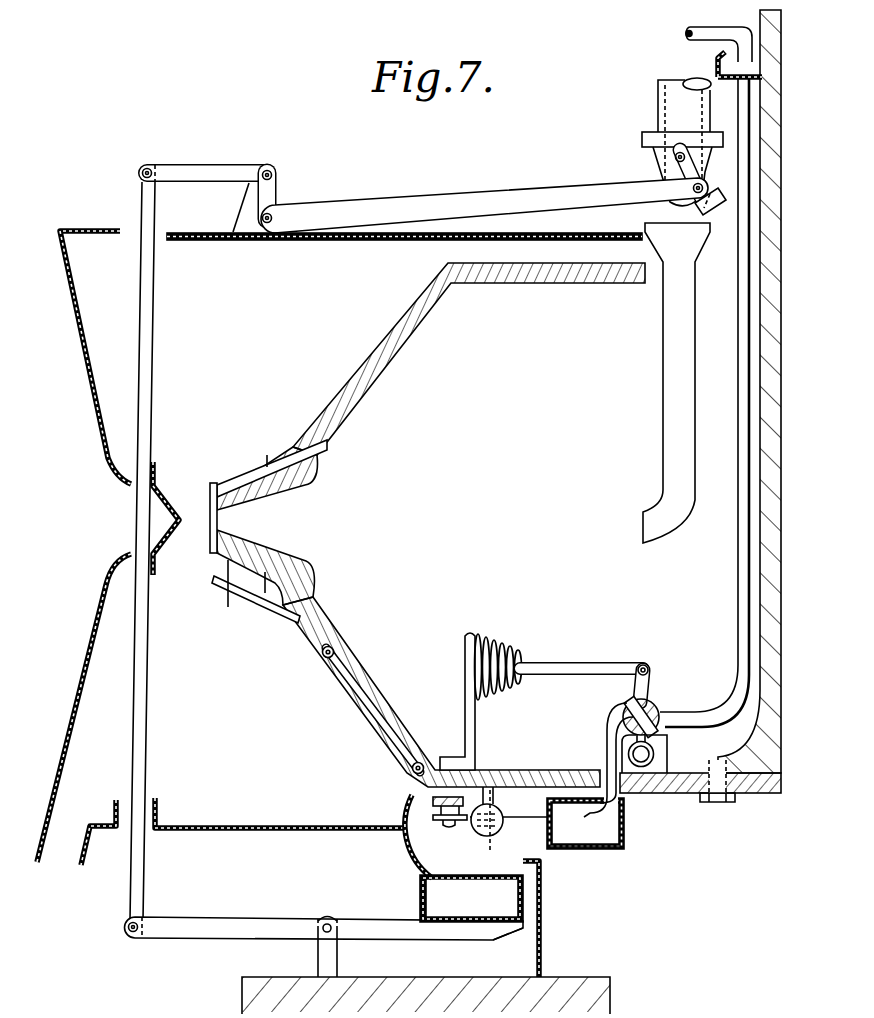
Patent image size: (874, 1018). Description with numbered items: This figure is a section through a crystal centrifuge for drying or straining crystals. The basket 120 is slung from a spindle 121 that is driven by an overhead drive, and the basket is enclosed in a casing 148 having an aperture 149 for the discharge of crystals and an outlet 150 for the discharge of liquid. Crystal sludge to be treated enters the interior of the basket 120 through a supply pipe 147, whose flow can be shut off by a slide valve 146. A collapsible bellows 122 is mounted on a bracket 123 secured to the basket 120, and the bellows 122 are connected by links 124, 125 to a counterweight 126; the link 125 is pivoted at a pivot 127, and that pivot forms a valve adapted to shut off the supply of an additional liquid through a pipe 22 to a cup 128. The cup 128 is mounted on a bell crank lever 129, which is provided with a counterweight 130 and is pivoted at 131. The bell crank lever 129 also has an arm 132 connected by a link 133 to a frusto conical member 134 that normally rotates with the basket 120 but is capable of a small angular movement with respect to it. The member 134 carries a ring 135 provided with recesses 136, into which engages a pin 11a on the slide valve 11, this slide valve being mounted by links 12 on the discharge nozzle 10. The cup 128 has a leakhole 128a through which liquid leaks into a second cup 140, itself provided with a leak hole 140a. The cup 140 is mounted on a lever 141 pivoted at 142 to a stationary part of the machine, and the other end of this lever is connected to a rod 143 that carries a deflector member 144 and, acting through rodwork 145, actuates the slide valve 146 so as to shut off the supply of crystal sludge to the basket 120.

The discharge nozzle 10 is at (291, 480).
The slide valve 11 is at (212, 495).
The pin 11a is at (220, 573).
The links 12 is at (242, 467).
The pipe 22 is at (738, 444).
The basket 120 is at (497, 279).
The spindle 121 is at (765, 560).
The collapsible bellows 122 is at (493, 640).
The bracket 123 is at (463, 658).
The link 124 is at (603, 662).
The link 125 is at (652, 688).
The counterweight 126 is at (628, 754).
The pivot 127 is at (659, 702).
The cup 128 is at (611, 843).
The leakhole 128a is at (545, 850).
The bell crank lever 129 is at (533, 818).
The counterweight 130 is at (476, 828).
The pivot 131 is at (493, 833).
The arm 132 is at (458, 822).
The link 133 is at (437, 810).
The frusto conical member 134 is at (362, 717).
The ring 135 is at (251, 603).
The recesses 136 is at (218, 594).
The cup 140 is at (471, 898).
The leak hole 140a is at (510, 928).
The lever 141 is at (385, 920).
The pivot 142 is at (328, 924).
The rod 143 is at (146, 690).
The deflector member 144 is at (173, 523).
The rodwork 145 is at (480, 184).
The slide valve 146 is at (672, 167).
The supply pipe 147 is at (668, 365).
The casing 148 is at (66, 262).
The aperture 149 is at (130, 509).
The outlet 150 is at (98, 821).